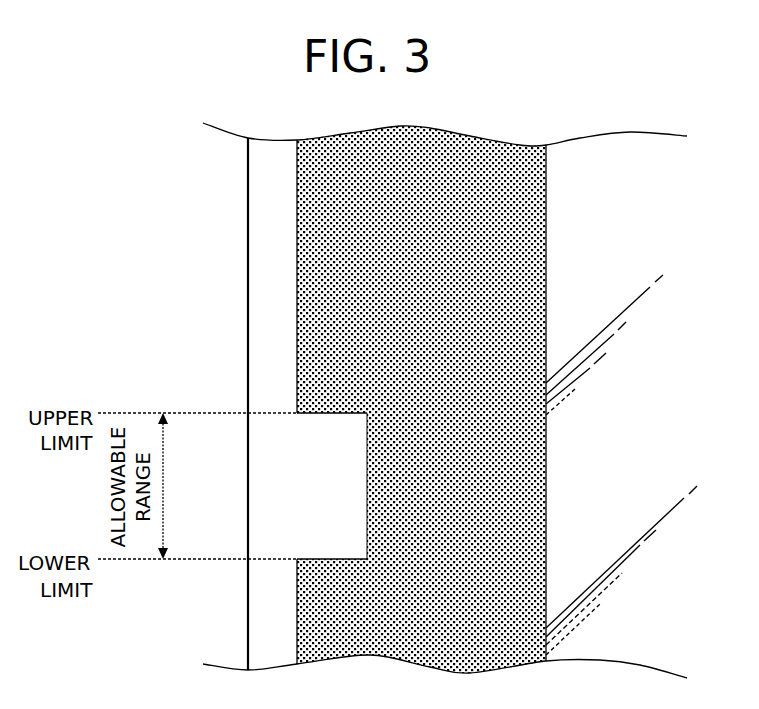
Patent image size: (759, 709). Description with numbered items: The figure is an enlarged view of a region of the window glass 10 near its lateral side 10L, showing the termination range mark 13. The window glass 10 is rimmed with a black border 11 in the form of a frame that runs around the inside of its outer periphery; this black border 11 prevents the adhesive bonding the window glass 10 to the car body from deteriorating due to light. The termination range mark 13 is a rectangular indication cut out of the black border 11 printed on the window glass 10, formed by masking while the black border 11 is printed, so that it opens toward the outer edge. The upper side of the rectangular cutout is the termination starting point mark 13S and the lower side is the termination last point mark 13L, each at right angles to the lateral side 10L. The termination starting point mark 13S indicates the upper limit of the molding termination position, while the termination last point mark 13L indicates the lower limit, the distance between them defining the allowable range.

The window glass 10 is at (214, 156).
The lateral side 10L is at (248, 212).
The black border 11 is at (312, 275).
The termination range mark 13 is at (278, 485).
The termination starting point mark 13S is at (338, 413).
The termination last point mark 13L is at (333, 559).